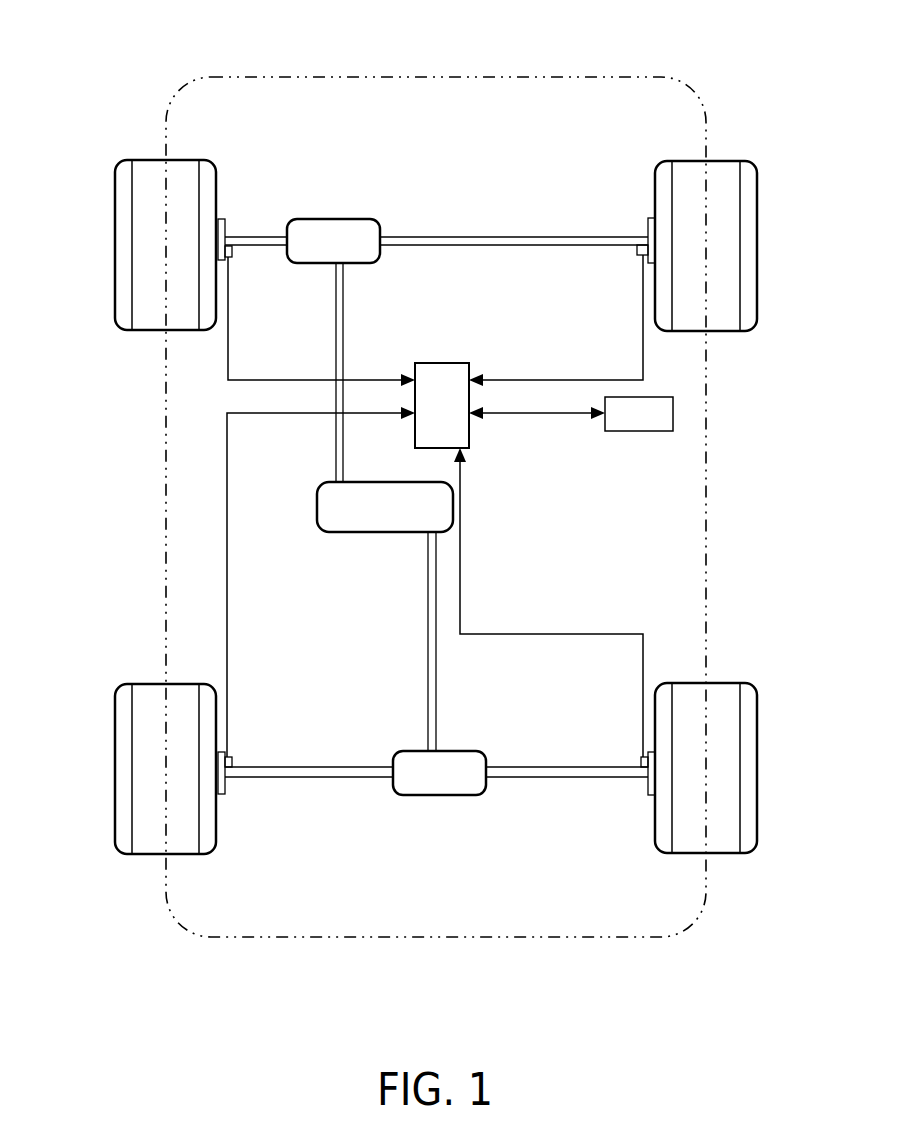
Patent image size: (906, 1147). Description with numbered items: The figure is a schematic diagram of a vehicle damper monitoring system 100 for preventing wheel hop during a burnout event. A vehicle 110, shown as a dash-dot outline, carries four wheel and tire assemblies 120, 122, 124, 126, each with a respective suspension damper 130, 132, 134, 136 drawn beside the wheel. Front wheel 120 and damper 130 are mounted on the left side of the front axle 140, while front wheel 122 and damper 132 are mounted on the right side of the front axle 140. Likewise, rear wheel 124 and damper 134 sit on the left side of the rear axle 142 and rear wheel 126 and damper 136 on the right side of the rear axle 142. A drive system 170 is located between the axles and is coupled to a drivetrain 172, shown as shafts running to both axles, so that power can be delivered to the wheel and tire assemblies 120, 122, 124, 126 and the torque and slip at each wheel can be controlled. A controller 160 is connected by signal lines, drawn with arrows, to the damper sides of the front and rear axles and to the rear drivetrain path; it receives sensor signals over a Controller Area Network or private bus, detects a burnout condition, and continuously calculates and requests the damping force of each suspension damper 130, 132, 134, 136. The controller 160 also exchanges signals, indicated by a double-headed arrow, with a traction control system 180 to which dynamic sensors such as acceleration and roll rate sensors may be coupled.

The vehicle damper monitoring system 100 is at (64, 958).
The vehicle 110 is at (427, 62).
The front wheel 120 is at (160, 160).
The front wheel 122 is at (722, 161).
The rear wheel 124 is at (160, 684).
The rear wheel 126 is at (724, 683).
The suspension damper 130 is at (220, 218).
The suspension damper 132 is at (650, 218).
The suspension damper 134 is at (220, 794).
The suspension damper 136 is at (650, 795).
The front axle 140 is at (408, 235).
The rear axle 142 is at (498, 780).
The controller 160 is at (435, 506).
The drive system 170 is at (385, 507).
The drivetrain 172 is at (343, 345).
The traction control system 180 is at (571, 414).